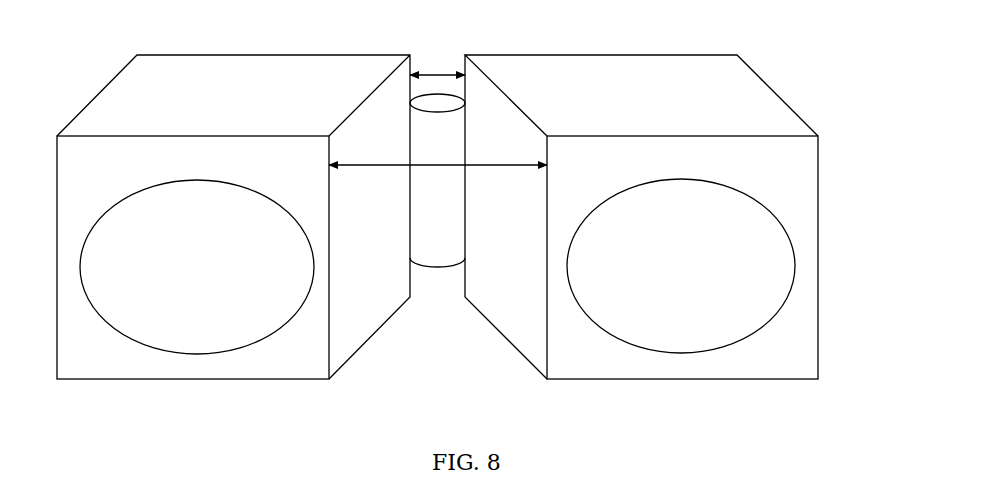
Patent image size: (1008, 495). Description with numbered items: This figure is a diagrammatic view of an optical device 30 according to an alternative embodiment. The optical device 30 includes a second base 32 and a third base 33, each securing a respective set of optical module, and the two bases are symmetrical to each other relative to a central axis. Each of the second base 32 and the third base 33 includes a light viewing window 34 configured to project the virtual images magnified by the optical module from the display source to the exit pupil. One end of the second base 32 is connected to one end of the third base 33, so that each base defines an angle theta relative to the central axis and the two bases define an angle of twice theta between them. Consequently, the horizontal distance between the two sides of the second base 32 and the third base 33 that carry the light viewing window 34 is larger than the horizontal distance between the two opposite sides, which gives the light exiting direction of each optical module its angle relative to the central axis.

The optical device 30 is at (472, 195).
The second base 32 is at (192, 55).
The third base 33 is at (676, 217).
The light viewing window 34 is at (782, 280).